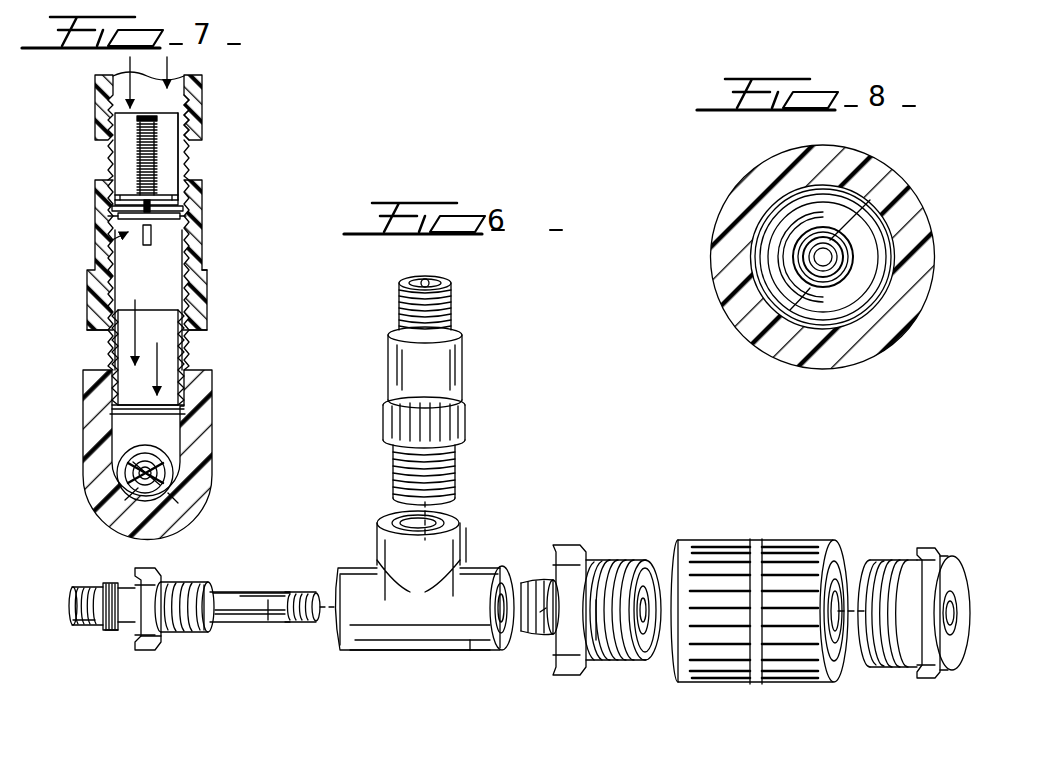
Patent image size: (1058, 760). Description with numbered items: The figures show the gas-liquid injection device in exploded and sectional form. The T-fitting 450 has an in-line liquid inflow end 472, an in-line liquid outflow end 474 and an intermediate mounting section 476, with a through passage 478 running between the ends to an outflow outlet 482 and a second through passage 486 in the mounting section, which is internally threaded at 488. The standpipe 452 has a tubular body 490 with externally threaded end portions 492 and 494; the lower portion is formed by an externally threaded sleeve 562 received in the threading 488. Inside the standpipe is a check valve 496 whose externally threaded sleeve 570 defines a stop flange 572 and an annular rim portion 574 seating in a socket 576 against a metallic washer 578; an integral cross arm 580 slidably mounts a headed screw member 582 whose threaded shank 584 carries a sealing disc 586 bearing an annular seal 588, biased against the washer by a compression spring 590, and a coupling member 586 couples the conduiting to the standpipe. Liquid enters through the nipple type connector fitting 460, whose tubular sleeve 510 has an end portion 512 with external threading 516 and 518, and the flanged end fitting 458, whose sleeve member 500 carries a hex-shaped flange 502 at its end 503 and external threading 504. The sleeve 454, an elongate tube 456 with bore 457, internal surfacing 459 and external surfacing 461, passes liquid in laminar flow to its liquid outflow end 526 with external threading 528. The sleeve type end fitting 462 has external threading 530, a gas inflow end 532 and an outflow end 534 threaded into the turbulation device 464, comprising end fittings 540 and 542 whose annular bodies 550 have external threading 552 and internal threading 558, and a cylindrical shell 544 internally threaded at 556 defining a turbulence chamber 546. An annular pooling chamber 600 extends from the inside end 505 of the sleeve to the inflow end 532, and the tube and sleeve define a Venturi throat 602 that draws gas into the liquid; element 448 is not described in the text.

In FIG. 6, the threaded inlet opening 448 is at (430, 524).
In FIG. 7, the T-fitting 450 is at (85, 482).
In FIG. 6, the T-fitting 450 is at (462, 560).
In FIG. 6, the standpipe 452 is at (465, 362).
In FIG. 7, the sleeve 454 is at (118, 478).
In FIG. 6, the sleeve 454 is at (243, 632).
In FIG. 8, the sleeve 454 is at (840, 240).
In FIG. 7, the elongate tube 456 is at (182, 487).
In FIG. 6, the elongate tube 456 is at (268, 624).
In FIG. 7, the bore 457 is at (120, 450).
In FIG. 8, the bore 457 is at (790, 254).
In FIG. 6, the flanged end fitting 458 is at (200, 568).
In FIG. 7, the internal surfacing 459 is at (178, 505).
In FIG. 6, the nipple type connector fitting 460 is at (103, 640).
In FIG. 7, the external surfacing 461 is at (125, 500).
In FIG. 6, the external surfacing 461 is at (235, 624).
In FIG. 6, the sleeve type end fitting 462 is at (542, 660).
In FIG. 6, the turbulation device 464 is at (822, 520).
In FIG. 8, the turbulation device 464 is at (970, 200).
In FIG. 6, the in-line liquid inflow end 472 is at (350, 652).
In FIG. 6, the in-line liquid outflow end 474 is at (470, 652).
In FIG. 6, the mounting section 476 is at (462, 545).
In FIG. 7, the through passage 478 is at (190, 470).
In FIG. 6, the through passage 478 is at (495, 609).
In FIG. 6, the outflow outlet 482 is at (508, 580).
In FIG. 7, the through passage 486 is at (182, 420).
In FIG. 7, the internal threading 488 is at (190, 380).
In FIG. 7, the tubular body 490 is at (205, 240).
In FIG. 7, the externally threaded end portion 492 is at (188, 345).
In FIG. 6, the externally threaded end portion 492 is at (450, 475).
In FIG. 7, the externally threaded end portion 494 is at (185, 150).
In FIG. 6, the externally threaded end portion 494 is at (450, 308).
In FIG. 7, the check valve 496 is at (110, 240).
In FIG. 6, the sleeve member 500 is at (175, 640).
In FIG. 6, the flange 502 is at (145, 648).
In FIG. 6, the end of sleeve 503 is at (165, 650).
In FIG. 6, the external threading 504 is at (185, 580).
In FIG. 6, the inside end 505 is at (210, 595).
In FIG. 6, the tubular sleeve 510 is at (106, 585).
In FIG. 6, the end portion 512 is at (72, 620).
In FIG. 6, the external threading 516 is at (80, 603).
In FIG. 6, the external threading 518 is at (119, 583).
In FIG. 6, the liquid outflow end 526 is at (345, 650).
In FIG. 8, the liquid outflow end 526 is at (850, 245).
In FIG. 6, the external threading 528 is at (312, 595).
In FIG. 6, the external threading 530 is at (560, 560).
In FIG. 6, the gas inflow end 532 is at (530, 630).
In FIG. 8, the outflow end 534 is at (815, 292).
In FIG. 6, the end fitting 540 is at (622, 668).
In FIG. 8, the end fitting 540 is at (860, 255).
In FIG. 6, the end fitting 542 is at (900, 670).
In FIG. 6, the cylindrical shell 544 is at (822, 556).
In FIG. 8, the cylindrical shell 544 is at (935, 300).
In FIG. 8, the turbulence chamber 546 is at (773, 233).
In FIG. 6, the annular body 550 is at (638, 566).
In FIG. 6, the external threading 552 is at (612, 660).
In FIG. 6, the internal threading 556 is at (833, 605).
In FIG. 6, the internal threading 558 is at (648, 590).
In FIG. 7, the externally threaded sleeve 562 is at (108, 336).
In FIG. 7, the externally threaded sleeve 570 is at (108, 164).
In FIG. 7, the stop flange 572 is at (190, 192).
In FIG. 7, the annular rim portion 574 is at (122, 198).
In FIG. 7, the socket 576 is at (180, 206).
In FIG. 7, the metallic washer 578 is at (118, 216).
In FIG. 7, the cross arm 580 is at (182, 178).
In FIG. 7, the headed screw member 582 is at (155, 110).
In FIG. 7, the threaded shank 584 is at (108, 160).
In FIG. 7, the sealing disc 586 is at (200, 100).
In FIG. 7, the annular seal 588 is at (182, 218).
In FIG. 7, the compression spring 590 is at (158, 135).
In FIG. 7, the annular pooling chamber 600 is at (178, 445).
In FIG. 8, the Venturi throat 602 is at (848, 290).